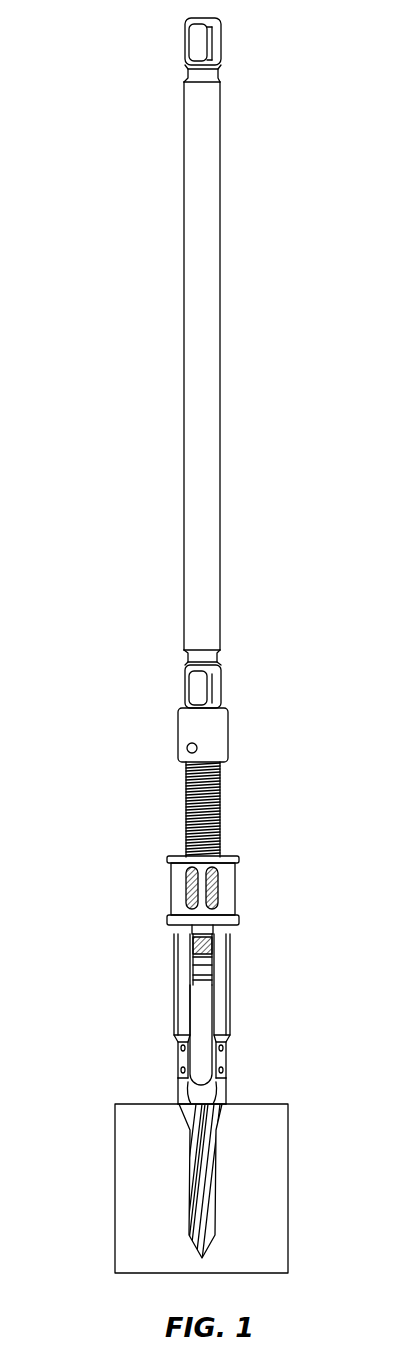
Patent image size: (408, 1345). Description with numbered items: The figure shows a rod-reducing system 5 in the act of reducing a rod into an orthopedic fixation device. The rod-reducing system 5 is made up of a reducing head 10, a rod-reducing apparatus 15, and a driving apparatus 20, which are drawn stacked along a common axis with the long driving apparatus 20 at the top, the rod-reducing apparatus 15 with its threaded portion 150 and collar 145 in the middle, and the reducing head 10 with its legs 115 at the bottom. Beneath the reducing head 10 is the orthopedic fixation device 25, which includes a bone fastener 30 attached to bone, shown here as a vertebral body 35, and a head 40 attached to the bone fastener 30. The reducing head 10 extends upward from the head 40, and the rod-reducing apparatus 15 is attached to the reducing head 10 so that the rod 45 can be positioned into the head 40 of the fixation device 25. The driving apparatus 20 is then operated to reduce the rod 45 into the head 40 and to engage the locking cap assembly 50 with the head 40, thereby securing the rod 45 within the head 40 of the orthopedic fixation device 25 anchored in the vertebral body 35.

The rod-reducing system 5 is at (296, 258).
The driving apparatus 20 is at (106, 331).
The threaded portion 150 is at (188, 806).
The rod-reducing apparatus 15 is at (150, 862).
The collar 145 is at (234, 860).
The reducing head 10 is at (165, 950).
The holder legs 115 is at (176, 985).
The locking cap assembly 50 is at (212, 958).
The rod 45 is at (212, 984).
The head 40 is at (224, 1070).
The orthopedic fixation device 25 is at (281, 1088).
The bone fastener 30 is at (191, 1157).
The vertebral body 35 is at (277, 1273).